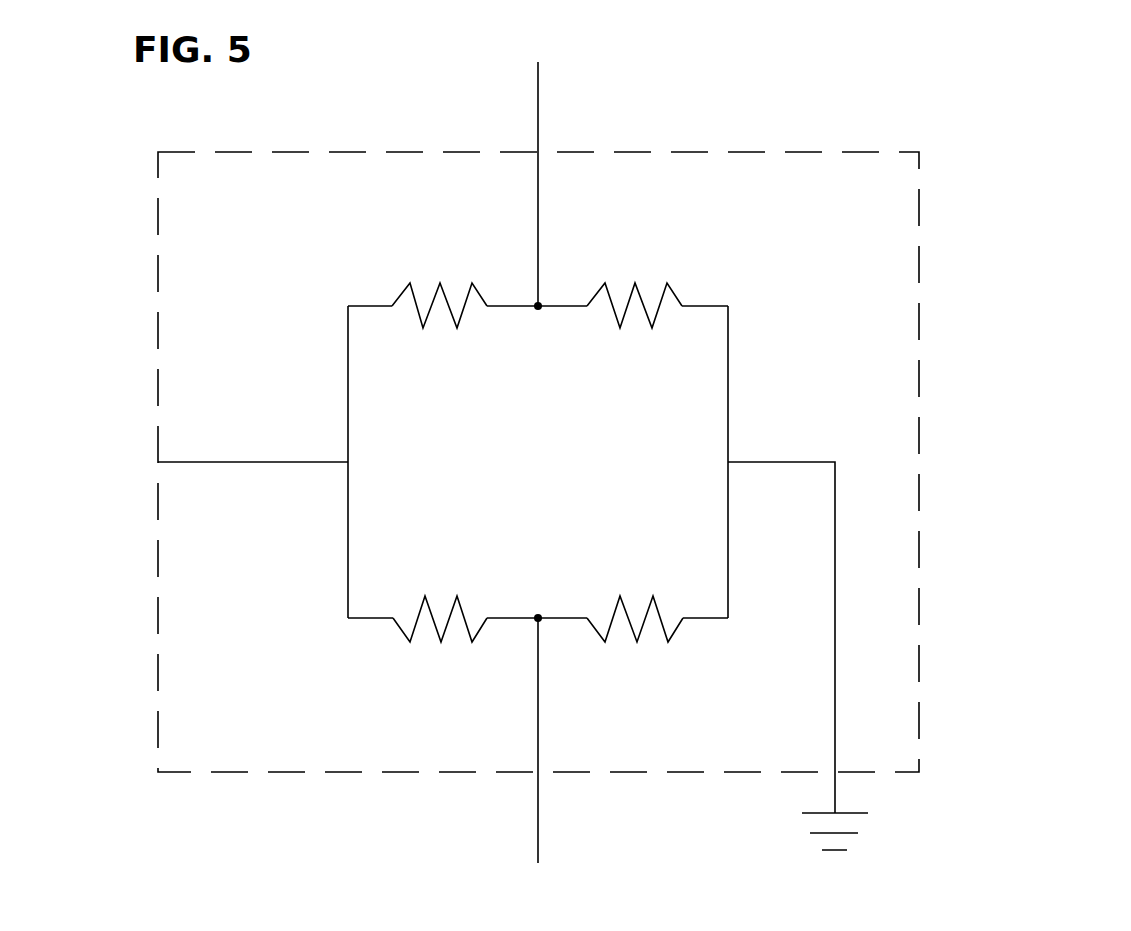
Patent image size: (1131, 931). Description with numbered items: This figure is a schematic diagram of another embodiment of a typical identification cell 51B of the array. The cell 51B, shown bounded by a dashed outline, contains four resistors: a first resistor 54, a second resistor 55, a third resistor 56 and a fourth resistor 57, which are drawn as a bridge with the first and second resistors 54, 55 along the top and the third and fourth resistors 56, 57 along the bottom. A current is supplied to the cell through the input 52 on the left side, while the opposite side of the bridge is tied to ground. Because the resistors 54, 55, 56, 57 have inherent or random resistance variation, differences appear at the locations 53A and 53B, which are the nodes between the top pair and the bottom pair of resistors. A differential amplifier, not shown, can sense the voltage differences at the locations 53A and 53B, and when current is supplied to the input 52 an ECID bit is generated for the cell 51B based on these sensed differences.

The cell 51B is at (935, 143).
The input 52 is at (237, 462).
The location 53A is at (538, 112).
The location 53B is at (539, 813).
The first resistor 54 is at (433, 275).
The second resistor 55 is at (628, 275).
The third resistor 56 is at (417, 590).
The fourth resistor 57 is at (613, 590).